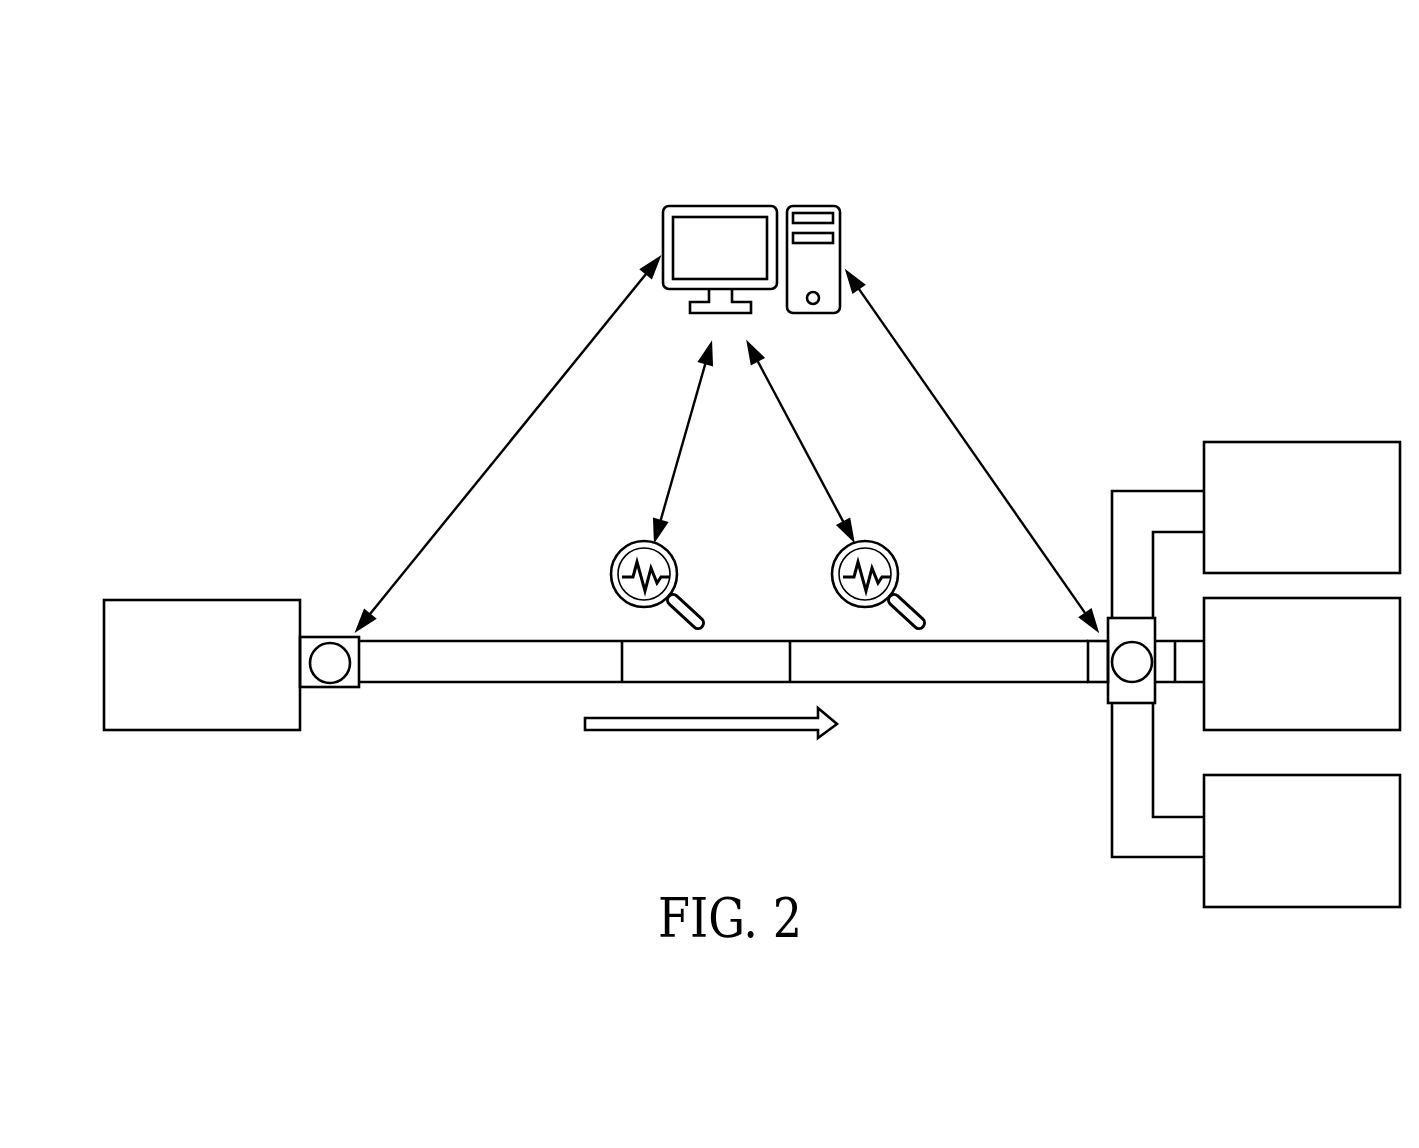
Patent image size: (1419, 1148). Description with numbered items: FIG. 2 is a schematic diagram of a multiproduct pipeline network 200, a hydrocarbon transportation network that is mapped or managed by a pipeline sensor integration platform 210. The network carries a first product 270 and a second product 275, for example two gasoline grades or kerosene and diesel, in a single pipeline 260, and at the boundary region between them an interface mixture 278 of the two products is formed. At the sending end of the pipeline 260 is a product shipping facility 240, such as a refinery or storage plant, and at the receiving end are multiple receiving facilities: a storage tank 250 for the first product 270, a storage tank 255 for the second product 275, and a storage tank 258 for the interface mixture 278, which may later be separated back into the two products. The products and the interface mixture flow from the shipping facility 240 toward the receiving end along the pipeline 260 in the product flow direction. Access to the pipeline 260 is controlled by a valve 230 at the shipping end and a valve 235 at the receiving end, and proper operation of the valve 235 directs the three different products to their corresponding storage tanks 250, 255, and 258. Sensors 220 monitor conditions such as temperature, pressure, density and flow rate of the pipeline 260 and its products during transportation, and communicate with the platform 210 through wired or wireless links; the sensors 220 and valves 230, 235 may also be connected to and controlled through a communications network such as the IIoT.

The multiproduct pipeline network 200 is at (412, 116).
The pipeline sensor integration platform 210 is at (775, 165).
The sensors 220 is at (823, 578).
The valve 230 is at (330, 687).
The valve 235 is at (1108, 690).
The product shipping facility 240 is at (202, 600).
The storage tank 250 is at (1255, 812).
The storage tank 255 is at (1255, 481).
The storage tank 258 is at (1255, 641).
The pipeline 260 is at (528, 682).
The first product 270 is at (595, 677).
The second product 275 is at (878, 677).
The interface mixture 278 is at (728, 716).